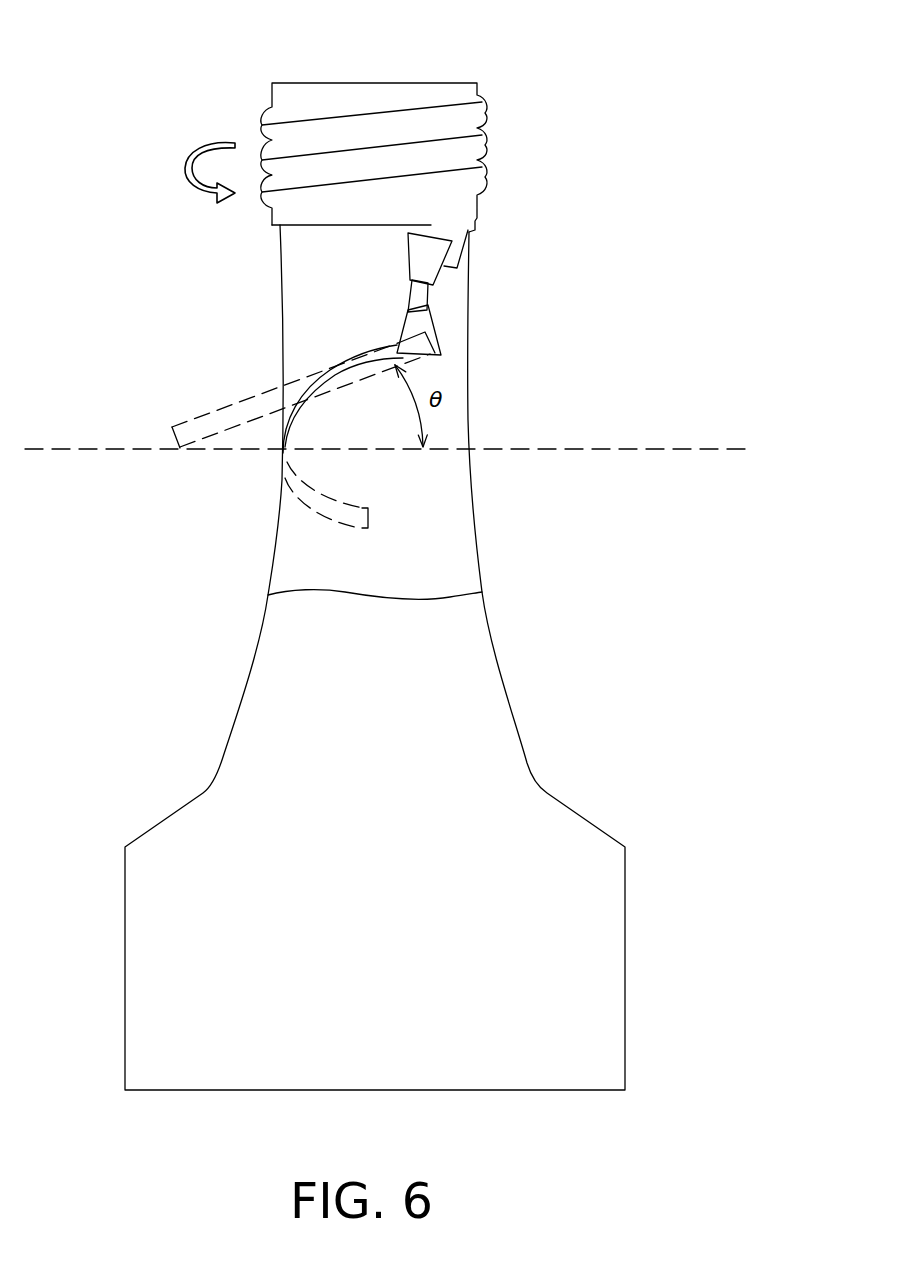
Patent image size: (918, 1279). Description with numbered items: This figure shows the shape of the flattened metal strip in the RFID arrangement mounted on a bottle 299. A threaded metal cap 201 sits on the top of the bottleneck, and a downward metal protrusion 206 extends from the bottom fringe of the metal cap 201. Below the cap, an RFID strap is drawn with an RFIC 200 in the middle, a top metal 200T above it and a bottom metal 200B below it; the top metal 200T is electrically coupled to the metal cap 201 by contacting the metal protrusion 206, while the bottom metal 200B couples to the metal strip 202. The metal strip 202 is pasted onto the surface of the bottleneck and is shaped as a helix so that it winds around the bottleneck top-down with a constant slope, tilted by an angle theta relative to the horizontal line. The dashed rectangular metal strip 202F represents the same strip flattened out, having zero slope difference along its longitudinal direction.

The metal cap 201 is at (413, 93).
The top metal 200T is at (433, 242).
The metal protrusion 206 is at (455, 253).
The RFIC 200 is at (426, 298).
The bottom metal 200B is at (417, 345).
The metal strip 202 is at (348, 360).
The flattened metal strip 202F is at (170, 436).
The bottle 299 is at (397, 1025).